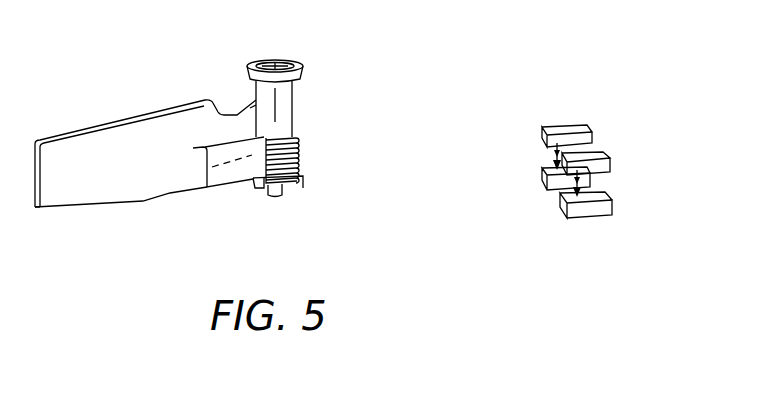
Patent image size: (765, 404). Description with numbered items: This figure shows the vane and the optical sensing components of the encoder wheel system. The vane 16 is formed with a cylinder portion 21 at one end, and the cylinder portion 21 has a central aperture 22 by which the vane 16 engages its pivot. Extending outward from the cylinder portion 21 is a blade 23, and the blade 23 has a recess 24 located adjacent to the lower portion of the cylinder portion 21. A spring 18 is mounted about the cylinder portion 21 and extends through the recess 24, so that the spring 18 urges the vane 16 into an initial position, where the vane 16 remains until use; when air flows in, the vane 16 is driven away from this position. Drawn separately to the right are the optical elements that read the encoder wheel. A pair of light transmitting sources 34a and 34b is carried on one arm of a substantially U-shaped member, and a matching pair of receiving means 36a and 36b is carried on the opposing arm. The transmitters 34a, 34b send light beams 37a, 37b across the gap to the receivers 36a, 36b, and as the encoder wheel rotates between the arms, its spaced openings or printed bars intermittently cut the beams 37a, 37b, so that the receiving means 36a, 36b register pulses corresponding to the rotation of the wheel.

The vane 16 is at (100, 85).
The spring 18 is at (300, 152).
The cylinder portion 21 is at (291, 106).
The central aperture 22 is at (276, 66).
The blade 23 is at (68, 193).
The recess 24 is at (262, 186).
The light transmitting source 34a is at (572, 128).
The light transmitting source 34b is at (602, 152).
The receiving means 36a is at (592, 187).
The receiving means 36b is at (593, 208).
The light beam 37a is at (553, 158).
The light beam 37b is at (573, 187).